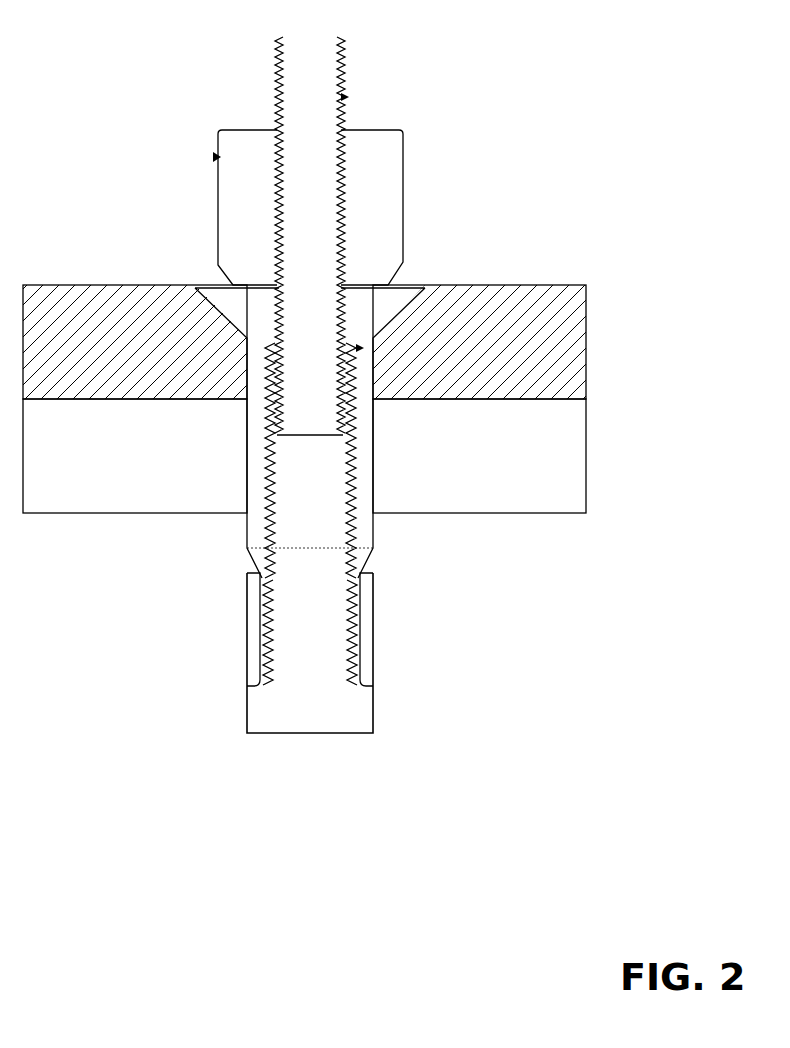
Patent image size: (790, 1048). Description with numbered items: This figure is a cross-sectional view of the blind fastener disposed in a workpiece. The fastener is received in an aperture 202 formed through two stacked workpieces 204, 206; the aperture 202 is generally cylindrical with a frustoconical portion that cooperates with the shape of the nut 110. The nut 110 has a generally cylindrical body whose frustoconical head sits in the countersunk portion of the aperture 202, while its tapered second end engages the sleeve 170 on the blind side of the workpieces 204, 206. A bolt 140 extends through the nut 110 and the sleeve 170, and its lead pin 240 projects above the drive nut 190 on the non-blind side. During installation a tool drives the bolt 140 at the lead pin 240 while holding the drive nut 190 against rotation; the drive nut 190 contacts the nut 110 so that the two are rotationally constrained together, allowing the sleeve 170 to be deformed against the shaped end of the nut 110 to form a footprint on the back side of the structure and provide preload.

The nut 110 is at (400, 532).
The bolt 140 is at (350, 712).
The sleeve 170 is at (257, 625).
The drive nut 190 is at (408, 205).
The aperture 202 is at (277, 412).
The workpiece 204 is at (548, 348).
The workpiece 206 is at (542, 432).
The lead pin 240 is at (345, 62).